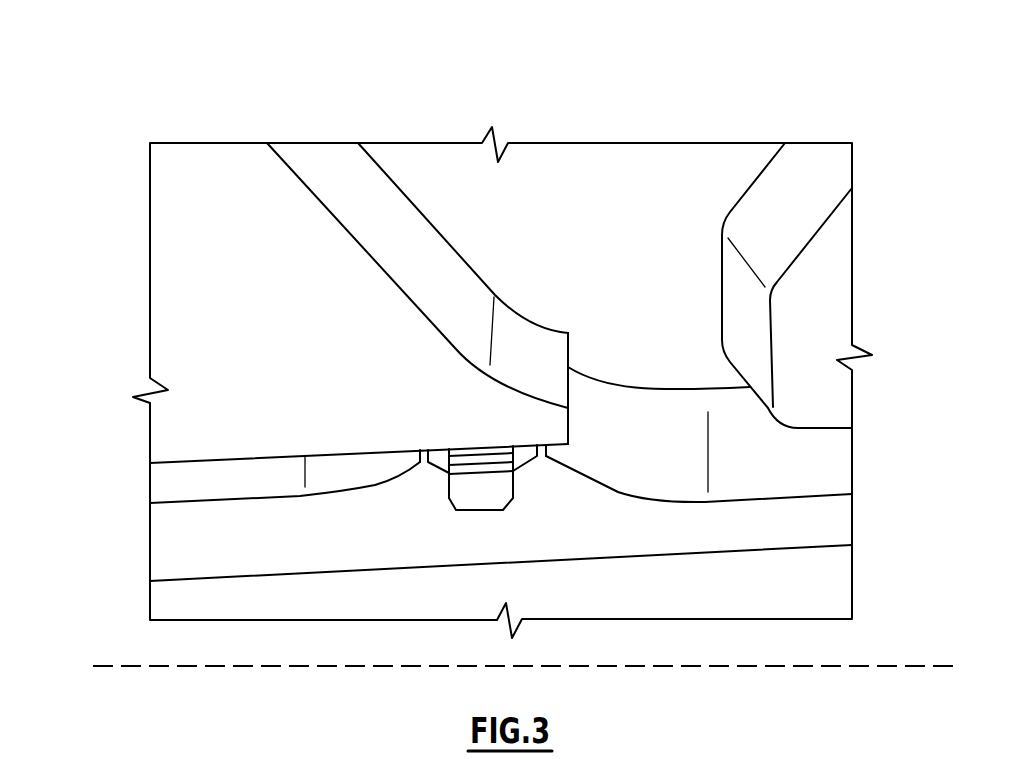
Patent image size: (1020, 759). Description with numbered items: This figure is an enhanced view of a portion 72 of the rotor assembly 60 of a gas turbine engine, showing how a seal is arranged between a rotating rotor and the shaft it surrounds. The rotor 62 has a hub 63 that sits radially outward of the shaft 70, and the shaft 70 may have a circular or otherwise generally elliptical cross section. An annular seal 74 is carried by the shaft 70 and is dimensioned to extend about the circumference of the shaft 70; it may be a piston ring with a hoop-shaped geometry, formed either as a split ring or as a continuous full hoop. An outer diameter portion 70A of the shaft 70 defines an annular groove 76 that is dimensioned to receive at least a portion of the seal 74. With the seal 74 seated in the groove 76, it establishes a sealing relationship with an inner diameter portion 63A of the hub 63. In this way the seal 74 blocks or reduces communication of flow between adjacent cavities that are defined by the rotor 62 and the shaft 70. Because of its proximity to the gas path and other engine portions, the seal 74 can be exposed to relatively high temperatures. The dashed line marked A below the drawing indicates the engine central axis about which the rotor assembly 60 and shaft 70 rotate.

The rotor assembly 60 is at (168, 84).
The portion 72 is at (168, 84).
The rotor 62 is at (145, 192).
The hub 63 is at (178, 257).
The inner diameter portion 63A is at (178, 465).
The shaft 70 is at (172, 548).
The outer diameter portion 70A is at (598, 478).
The annular seal 74 is at (468, 477).
The annular groove 76 is at (474, 510).
The engine central axis A is at (922, 666).